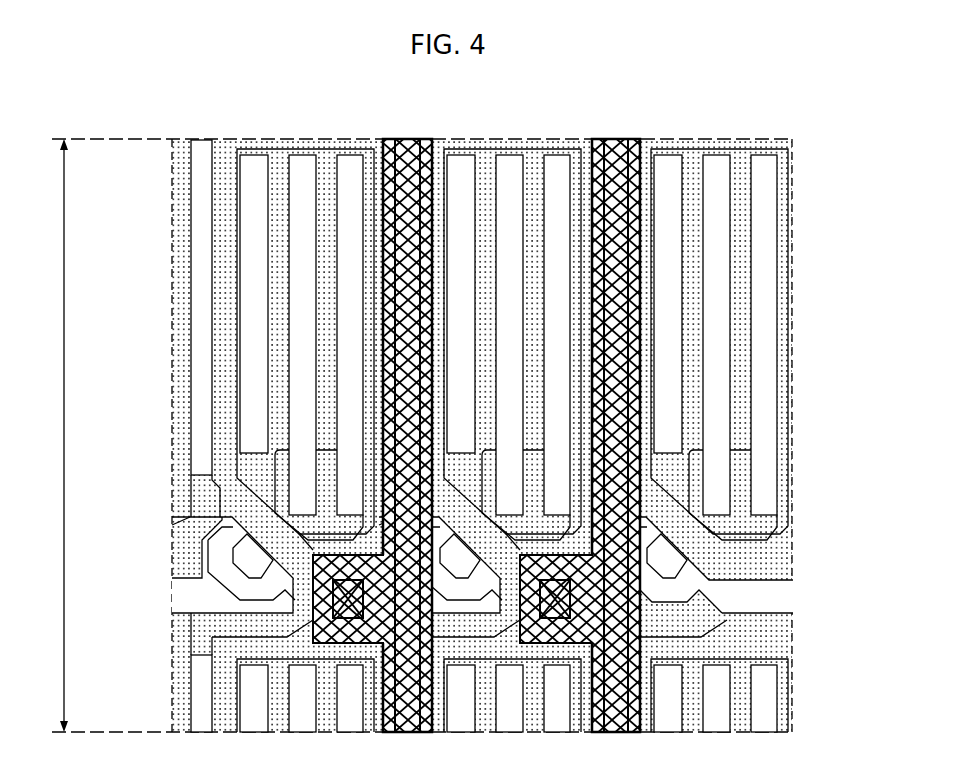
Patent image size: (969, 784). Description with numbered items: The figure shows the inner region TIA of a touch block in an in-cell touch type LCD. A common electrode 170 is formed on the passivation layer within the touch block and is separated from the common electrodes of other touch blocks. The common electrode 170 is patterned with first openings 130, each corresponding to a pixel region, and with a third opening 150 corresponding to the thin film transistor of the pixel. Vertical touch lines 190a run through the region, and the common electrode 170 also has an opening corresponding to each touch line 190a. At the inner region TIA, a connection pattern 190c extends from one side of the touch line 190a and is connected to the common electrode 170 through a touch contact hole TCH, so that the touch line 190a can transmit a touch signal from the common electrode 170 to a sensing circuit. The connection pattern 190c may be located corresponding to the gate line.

The first opening 130 is at (717, 175).
The third opening 150 is at (188, 595).
The common electrode 170 is at (645, 139).
The touch line 190a is at (397, 139).
The connection pattern 190c is at (313, 625).
The touch contact hole TCH is at (306, 606).
The inner region TIA is at (47, 435).